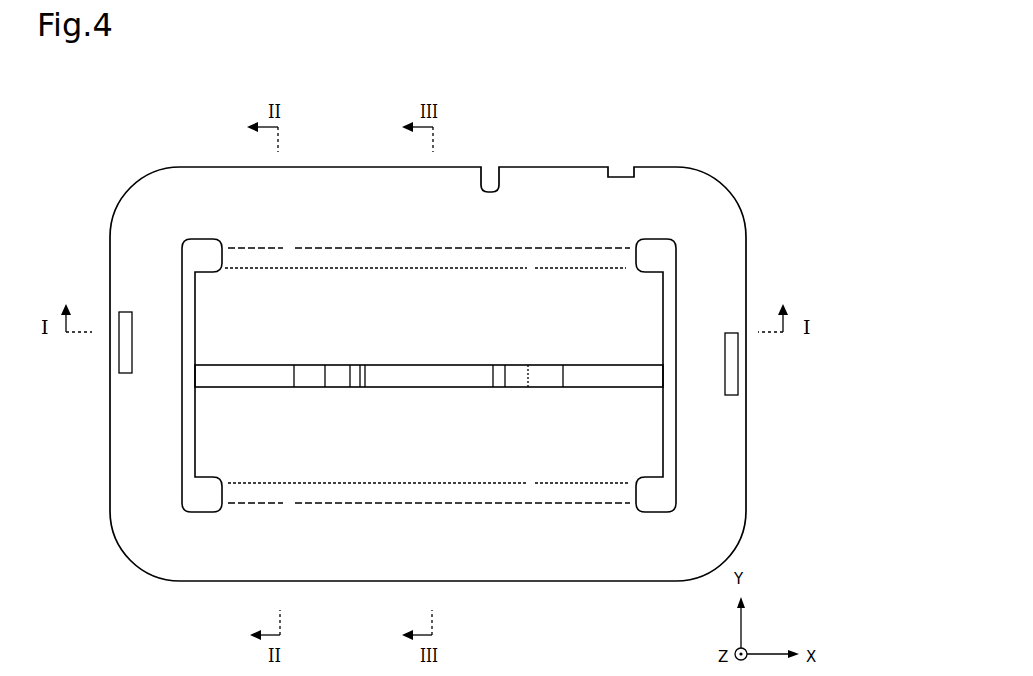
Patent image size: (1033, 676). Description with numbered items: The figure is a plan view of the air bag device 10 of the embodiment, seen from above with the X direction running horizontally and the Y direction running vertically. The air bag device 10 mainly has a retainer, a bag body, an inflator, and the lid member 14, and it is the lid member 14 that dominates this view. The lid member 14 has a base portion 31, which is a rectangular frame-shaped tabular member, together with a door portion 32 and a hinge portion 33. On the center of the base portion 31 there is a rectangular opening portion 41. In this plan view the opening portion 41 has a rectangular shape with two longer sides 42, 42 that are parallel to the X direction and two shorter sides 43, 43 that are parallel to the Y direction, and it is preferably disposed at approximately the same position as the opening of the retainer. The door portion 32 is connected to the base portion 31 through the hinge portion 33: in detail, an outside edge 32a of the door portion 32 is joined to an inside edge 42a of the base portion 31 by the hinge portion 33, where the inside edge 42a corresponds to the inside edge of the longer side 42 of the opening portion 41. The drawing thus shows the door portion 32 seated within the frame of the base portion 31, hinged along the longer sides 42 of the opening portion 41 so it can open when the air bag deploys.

The air bag device 10 is at (726, 156).
The lid member 14 is at (736, 192).
The base portion 31 is at (747, 461).
The door portion 32 is at (637, 312).
The outside edge 32a is at (464, 268).
The hinge portion 33 is at (563, 258).
The opening portion 41 is at (607, 377).
The longer side 42 is at (369, 248).
The inside edge 42a is at (337, 248).
The shorter side 43 is at (182, 448).